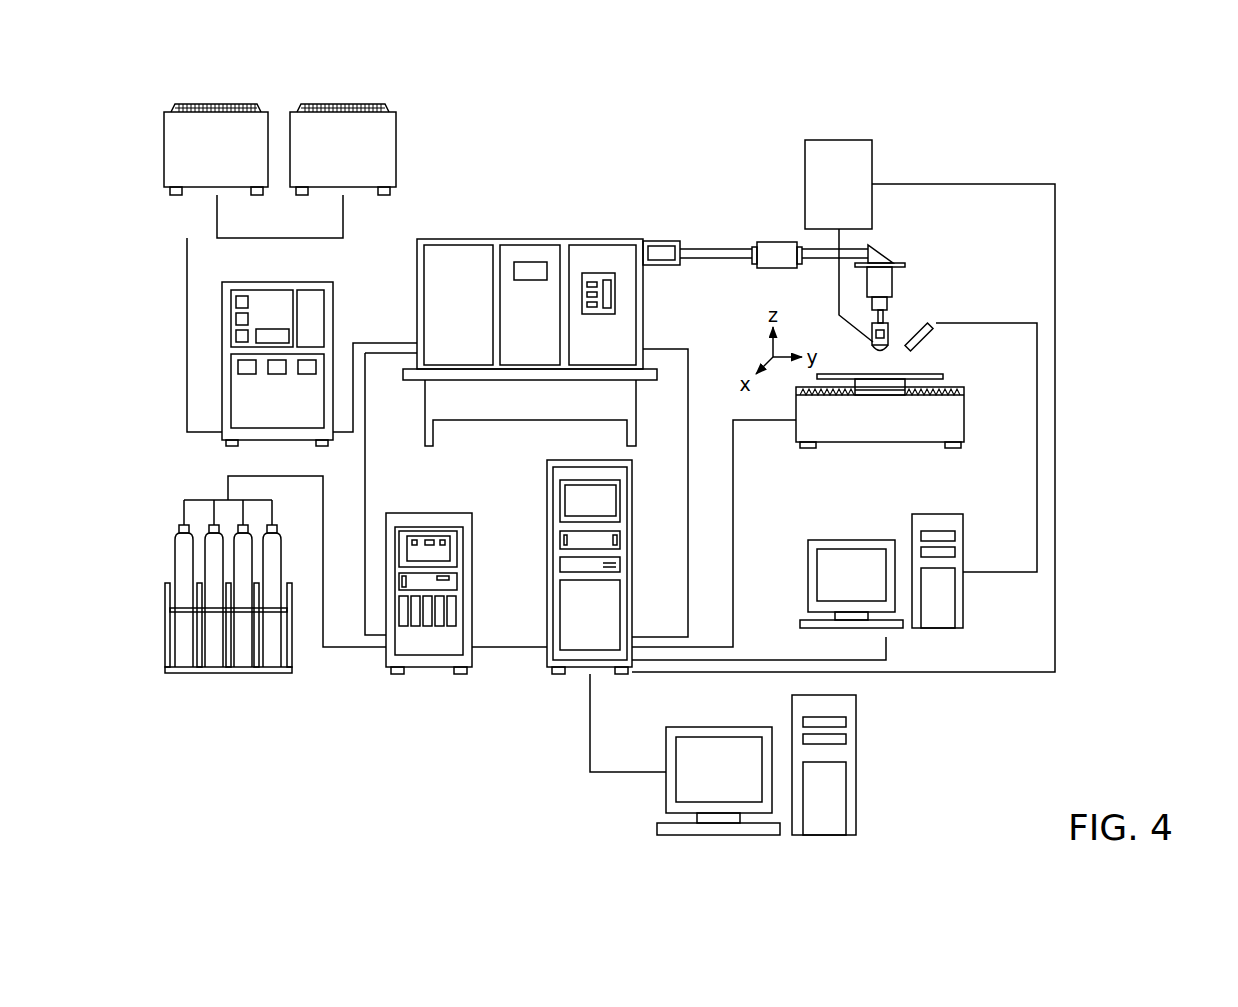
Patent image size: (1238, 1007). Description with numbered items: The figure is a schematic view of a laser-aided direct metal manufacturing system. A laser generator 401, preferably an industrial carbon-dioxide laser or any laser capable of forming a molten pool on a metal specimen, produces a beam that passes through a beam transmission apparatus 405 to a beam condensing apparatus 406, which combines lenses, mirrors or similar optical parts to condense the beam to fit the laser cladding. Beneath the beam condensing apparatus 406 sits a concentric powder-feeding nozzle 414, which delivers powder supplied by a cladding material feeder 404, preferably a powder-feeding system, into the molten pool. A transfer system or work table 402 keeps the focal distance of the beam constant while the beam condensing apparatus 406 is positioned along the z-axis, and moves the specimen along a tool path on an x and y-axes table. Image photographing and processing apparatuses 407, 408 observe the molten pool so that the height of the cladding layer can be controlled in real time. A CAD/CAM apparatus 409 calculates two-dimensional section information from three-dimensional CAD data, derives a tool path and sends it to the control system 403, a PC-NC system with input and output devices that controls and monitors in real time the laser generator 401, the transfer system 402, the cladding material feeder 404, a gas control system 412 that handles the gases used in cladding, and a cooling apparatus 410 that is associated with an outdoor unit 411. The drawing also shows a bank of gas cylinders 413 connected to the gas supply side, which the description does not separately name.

The laser generator 401 is at (523, 240).
The transfer system (work table) 402 is at (870, 448).
The control system 403 is at (572, 680).
The cladding material feeder 404 is at (845, 140).
The beam transmission apparatus 405 is at (770, 240).
The beam condensing apparatus 406 is at (890, 318).
The image photographing apparatus 407 is at (922, 345).
The image processing apparatus 408 is at (933, 640).
The CAD/CAM apparatus 409 is at (862, 763).
The cooling apparatus 410 is at (215, 442).
The outdoor unit 411 is at (305, 84).
The gas control system 412 is at (435, 680).
The gas cylinders 413 is at (228, 680).
The concentric powder-feeding nozzle 414 is at (893, 337).